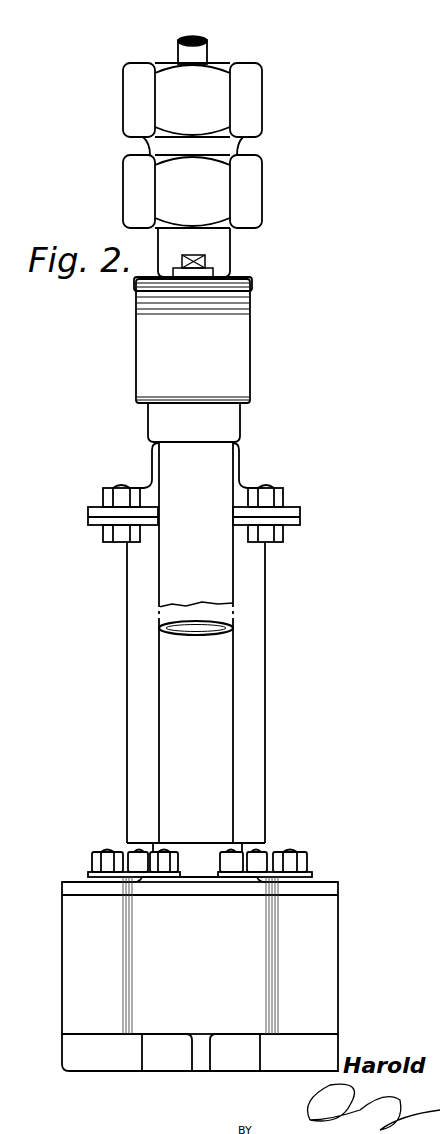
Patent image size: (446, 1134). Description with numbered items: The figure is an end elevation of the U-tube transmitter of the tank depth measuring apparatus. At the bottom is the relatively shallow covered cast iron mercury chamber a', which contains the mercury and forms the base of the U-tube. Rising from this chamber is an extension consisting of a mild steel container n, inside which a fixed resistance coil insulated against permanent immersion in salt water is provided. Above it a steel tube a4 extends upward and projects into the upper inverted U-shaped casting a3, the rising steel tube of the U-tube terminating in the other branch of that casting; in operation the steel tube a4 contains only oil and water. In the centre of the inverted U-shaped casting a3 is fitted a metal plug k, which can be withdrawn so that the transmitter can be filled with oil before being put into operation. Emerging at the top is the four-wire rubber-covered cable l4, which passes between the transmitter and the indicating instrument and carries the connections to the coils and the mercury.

The four-wire rubber-covered cable l4 is at (200, 53).
The metal plug k is at (198, 262).
The inverted U-shaped casting a3 is at (240, 278).
The steel tube a4 is at (196, 643).
The mild steel container n is at (257, 761).
The mercury chamber a' is at (226, 957).